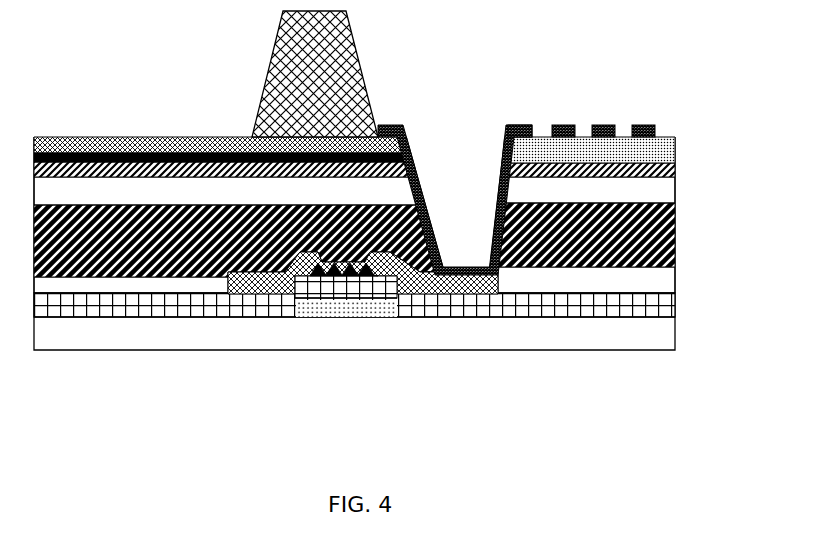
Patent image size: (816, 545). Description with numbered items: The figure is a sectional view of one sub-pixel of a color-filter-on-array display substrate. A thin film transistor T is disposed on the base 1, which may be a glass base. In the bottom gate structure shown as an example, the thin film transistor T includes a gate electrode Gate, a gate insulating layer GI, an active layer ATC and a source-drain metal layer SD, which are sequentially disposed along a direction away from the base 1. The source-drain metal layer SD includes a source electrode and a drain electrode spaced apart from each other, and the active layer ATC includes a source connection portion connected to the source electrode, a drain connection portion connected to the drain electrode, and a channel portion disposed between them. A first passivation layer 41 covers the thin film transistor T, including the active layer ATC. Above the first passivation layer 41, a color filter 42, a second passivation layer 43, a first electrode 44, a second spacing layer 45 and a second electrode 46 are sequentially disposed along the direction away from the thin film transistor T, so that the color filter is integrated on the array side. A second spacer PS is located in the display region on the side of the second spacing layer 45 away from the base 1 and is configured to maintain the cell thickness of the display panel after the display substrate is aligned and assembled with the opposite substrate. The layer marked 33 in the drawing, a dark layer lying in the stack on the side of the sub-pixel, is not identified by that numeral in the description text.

The base 1 is at (676, 320).
The first passivation layer 41 is at (676, 268).
The color filter 42 is at (676, 226).
The second passivation layer 43 is at (676, 191).
The first electrode 44 is at (676, 163).
The second spacing layer 45 is at (676, 138).
The second electrode 46 is at (527, 124).
The light shielding layer 33 is at (68, 153).
The second spacer PS is at (367, 72).
The gate insulating layer GI is at (480, 292).
The active layer ATC is at (342, 290).
The gate electrode Gate is at (380, 296).
The source-drain metal layer SD is at (448, 276).
The thin film transistor T is at (503, 390).